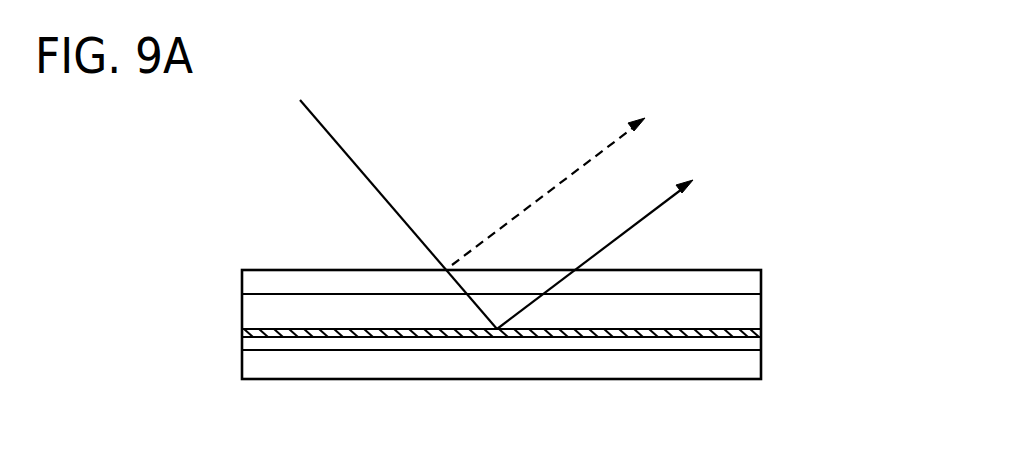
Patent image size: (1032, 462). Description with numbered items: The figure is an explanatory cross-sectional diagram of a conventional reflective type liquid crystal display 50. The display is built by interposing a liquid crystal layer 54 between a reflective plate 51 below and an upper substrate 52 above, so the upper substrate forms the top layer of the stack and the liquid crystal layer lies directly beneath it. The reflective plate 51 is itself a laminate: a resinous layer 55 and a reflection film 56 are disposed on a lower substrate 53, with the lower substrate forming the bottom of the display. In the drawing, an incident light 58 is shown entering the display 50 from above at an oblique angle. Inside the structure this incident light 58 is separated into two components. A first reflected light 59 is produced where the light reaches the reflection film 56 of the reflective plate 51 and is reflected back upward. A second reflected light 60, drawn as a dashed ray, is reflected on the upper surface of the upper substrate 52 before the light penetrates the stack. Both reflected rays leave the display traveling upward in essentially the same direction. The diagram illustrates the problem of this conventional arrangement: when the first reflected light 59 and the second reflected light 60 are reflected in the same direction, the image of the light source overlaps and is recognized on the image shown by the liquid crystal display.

The reflective type liquid crystal display 50 is at (882, 83).
The reflective plate 51 is at (840, 300).
The upper substrate 52 is at (753, 285).
The lower substrate 53 is at (735, 370).
The liquid crystal layer 54 is at (262, 311).
The resinous layer 55 is at (758, 333).
The reflection film 56 is at (757, 342).
The incident light 58 is at (385, 198).
The first reflected light 59 is at (616, 245).
The second reflected light 60 is at (568, 173).